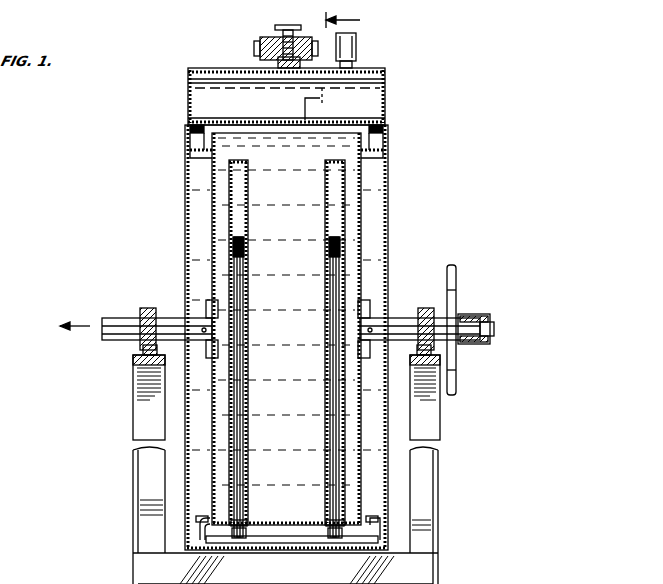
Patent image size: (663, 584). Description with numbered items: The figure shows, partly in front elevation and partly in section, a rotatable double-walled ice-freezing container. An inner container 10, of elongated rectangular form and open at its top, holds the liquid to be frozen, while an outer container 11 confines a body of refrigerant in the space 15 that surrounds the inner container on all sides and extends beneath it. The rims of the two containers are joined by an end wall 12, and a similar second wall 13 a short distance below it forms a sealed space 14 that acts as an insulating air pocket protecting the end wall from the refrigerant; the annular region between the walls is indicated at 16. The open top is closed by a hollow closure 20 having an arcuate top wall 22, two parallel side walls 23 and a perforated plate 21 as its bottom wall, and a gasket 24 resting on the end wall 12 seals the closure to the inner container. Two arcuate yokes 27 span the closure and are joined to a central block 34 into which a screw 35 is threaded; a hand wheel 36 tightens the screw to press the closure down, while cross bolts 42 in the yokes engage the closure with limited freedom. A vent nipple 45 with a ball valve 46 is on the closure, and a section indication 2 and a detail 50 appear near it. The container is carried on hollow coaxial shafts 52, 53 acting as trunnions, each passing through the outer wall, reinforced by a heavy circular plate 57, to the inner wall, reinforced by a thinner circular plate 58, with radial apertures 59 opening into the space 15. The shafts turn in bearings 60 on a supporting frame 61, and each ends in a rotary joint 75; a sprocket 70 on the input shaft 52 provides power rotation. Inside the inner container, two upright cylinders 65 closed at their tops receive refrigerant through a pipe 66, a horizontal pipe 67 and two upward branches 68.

The section line 2- 2 is at (349, 19).
The inner container 10 is at (366, 198).
The outer container 11 is at (390, 170).
The end wall 12 is at (200, 135).
The second wall 13 is at (205, 165).
The sealed space 14 is at (372, 147).
The space 15 is at (196, 248).
The annular space 16 is at (372, 213).
The closure 20 is at (388, 118).
The perforated plate 21 is at (320, 122).
The arcuate top wall 22 is at (213, 68).
The side walls 23 is at (190, 100).
The gasket 24 is at (388, 129).
The arcuate yokes 27 is at (275, 38).
The central block 34 is at (286, 28).
The screw 35 is at (283, 62).
The hand wheel 36 is at (294, 30).
The cross bolts 42 is at (260, 48).
The nipple 45 is at (360, 63).
The ball valve 46 is at (360, 50).
The fitting cap 50 is at (356, 44).
The hollow shaft 52 is at (406, 360).
The hollow shaft 53 is at (160, 318).
The heavy circular plate 57 is at (184, 318).
The thinner circular plate 58 is at (213, 322).
The radial apertures 59 is at (201, 330).
The bearings 60 is at (143, 310).
The supporting frame 61 is at (443, 496).
The upright cylinders 65 is at (250, 172).
The pipe 66 is at (370, 471).
The horizontal pipe 67 is at (312, 545).
The branches 68 is at (244, 476).
The sprocket 70 is at (457, 300).
The rotary joint 75 is at (484, 344).